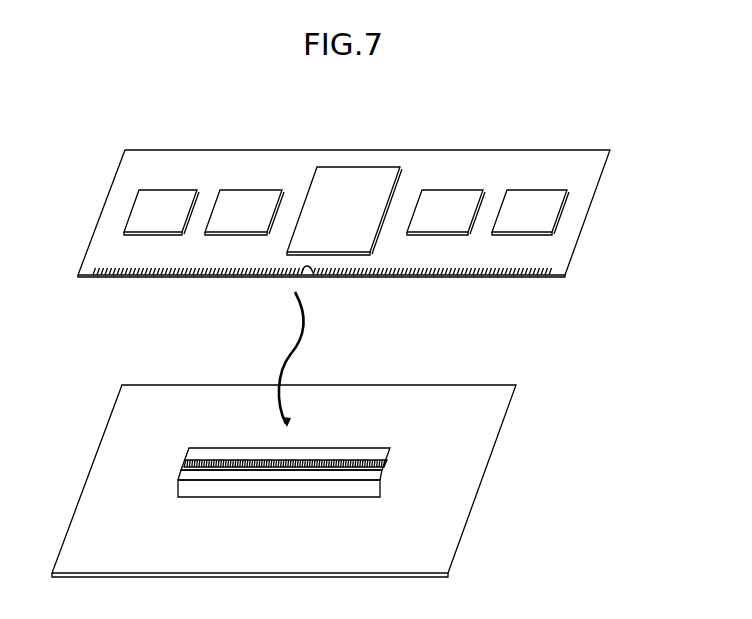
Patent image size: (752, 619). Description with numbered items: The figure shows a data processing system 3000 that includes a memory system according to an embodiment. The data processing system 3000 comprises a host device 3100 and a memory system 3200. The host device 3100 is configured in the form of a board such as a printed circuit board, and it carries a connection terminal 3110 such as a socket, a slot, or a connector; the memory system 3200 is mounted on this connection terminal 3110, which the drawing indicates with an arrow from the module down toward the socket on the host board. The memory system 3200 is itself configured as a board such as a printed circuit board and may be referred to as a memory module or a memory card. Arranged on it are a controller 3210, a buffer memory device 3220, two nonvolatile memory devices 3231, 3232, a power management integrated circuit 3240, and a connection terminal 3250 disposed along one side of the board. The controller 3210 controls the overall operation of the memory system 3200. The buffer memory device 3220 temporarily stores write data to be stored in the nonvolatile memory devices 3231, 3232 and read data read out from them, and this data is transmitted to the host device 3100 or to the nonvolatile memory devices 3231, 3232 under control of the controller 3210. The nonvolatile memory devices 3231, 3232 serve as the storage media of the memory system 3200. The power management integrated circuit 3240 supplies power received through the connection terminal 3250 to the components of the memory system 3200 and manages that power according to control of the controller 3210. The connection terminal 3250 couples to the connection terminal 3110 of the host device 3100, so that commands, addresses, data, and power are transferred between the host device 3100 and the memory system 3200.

The data processing system 3000 is at (212, 118).
The memory system 3200 is at (344, 232).
The controller 3210 is at (344, 211).
The buffer memory device 3220 is at (244, 212).
The nonvolatile memory device 3231 is at (446, 212).
The nonvolatile memory device 3232 is at (530, 212).
The power management integrated circuit 3240 is at (161, 212).
The connection terminal 3250 is at (108, 277).
The host device 3100 is at (284, 481).
The connection terminal 3110 is at (407, 443).